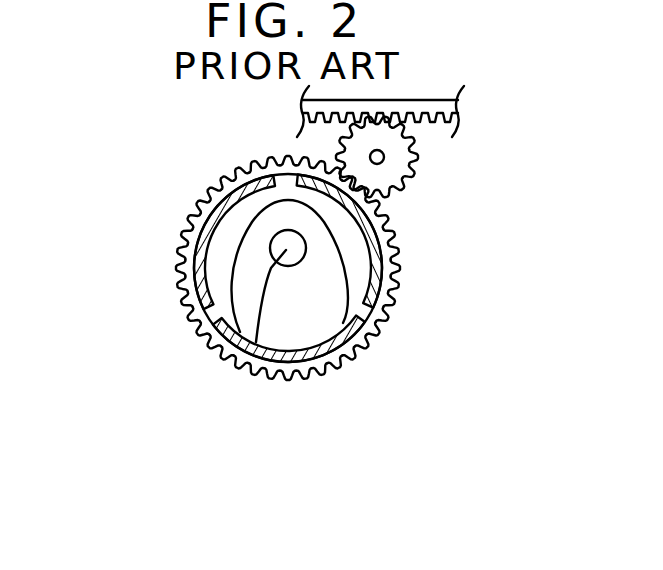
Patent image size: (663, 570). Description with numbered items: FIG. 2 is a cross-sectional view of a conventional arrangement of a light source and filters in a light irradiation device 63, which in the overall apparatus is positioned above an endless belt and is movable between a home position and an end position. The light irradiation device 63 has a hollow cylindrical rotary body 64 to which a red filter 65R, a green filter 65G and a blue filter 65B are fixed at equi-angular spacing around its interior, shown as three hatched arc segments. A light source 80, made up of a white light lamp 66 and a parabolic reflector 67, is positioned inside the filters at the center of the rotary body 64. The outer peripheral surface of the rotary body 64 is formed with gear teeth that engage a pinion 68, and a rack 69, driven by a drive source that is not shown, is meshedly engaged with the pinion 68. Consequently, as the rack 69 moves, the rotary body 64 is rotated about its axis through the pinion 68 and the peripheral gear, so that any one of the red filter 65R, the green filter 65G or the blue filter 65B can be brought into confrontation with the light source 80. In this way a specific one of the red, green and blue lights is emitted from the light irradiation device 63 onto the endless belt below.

The light irradiation device 63 is at (214, 167).
The hollow cylindrical rotary body 64 is at (401, 270).
The green filter 65G is at (373, 291).
The red filter 65R is at (340, 363).
The blue filter 65B is at (197, 267).
The white light lamp 66 is at (247, 357).
The parabolic reflector 67 is at (203, 327).
The pinion 68 is at (419, 163).
The rack 69 is at (413, 111).
The light source 80 is at (237, 251).